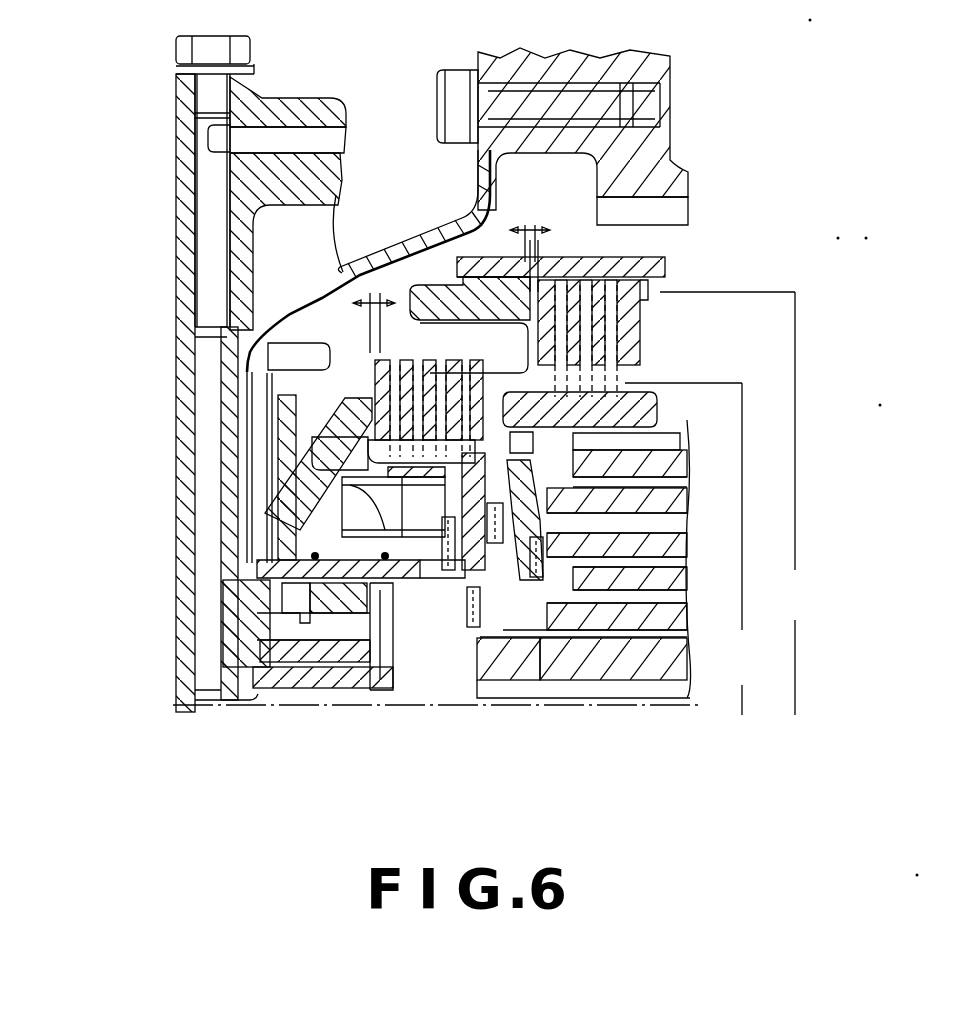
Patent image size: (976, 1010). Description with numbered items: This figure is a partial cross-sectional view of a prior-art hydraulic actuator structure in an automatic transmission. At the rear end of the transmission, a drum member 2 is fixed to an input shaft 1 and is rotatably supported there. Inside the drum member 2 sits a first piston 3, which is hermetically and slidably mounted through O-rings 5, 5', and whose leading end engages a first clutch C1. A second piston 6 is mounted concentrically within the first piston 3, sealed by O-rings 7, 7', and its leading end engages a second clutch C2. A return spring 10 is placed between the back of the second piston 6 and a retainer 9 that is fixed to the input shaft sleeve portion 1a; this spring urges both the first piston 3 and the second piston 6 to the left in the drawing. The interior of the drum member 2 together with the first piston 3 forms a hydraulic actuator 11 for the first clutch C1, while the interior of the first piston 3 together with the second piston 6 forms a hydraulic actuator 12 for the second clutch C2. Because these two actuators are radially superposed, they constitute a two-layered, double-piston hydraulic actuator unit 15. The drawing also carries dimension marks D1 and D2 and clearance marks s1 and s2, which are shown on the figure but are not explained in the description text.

The input shaft 1 is at (637, 663).
The input shaft sleeve portion 1a is at (376, 688).
The drum member 2 is at (473, 253).
The first piston 3 is at (320, 342).
The O-ring 5 is at (451, 286).
The O-ring 5' is at (193, 613).
The second piston 6 is at (290, 418).
The O-ring 7 is at (197, 513).
The O-ring 7' is at (341, 670).
The retainer 9 is at (468, 650).
The return spring 10 is at (295, 508).
The hydraulic actuator 11 is at (245, 352).
The hydraulic actuator 12 is at (295, 452).
The hydraulic actuator unit 15 is at (232, 285).
The first clutch C1 is at (580, 257).
The second clutch C2 is at (490, 390).
The first diameter D1 is at (731, 503).
The second diameter D2 is at (690, 549).
The first clearance s1 is at (505, 262).
The second clearance s2 is at (361, 323).